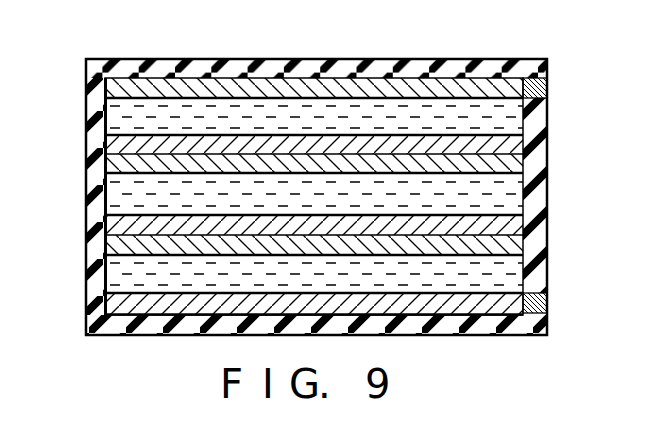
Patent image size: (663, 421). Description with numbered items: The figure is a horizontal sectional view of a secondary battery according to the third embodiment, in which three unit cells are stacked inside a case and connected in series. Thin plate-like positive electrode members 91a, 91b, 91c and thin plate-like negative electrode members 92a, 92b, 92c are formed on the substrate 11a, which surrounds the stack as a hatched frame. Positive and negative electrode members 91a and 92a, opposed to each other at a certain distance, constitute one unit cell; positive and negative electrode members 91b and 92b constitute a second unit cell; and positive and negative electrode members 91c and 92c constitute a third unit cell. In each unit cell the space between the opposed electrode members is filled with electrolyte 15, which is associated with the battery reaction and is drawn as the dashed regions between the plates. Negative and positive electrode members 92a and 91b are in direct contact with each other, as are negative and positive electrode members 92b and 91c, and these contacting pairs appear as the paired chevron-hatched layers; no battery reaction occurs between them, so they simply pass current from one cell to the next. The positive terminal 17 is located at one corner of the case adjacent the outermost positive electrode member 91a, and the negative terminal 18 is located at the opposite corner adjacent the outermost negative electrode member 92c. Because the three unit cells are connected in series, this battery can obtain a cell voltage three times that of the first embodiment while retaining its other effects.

The substrate 11a is at (481, 66).
The electrolyte 15 is at (118, 124).
The positive terminal 17 is at (547, 88).
The negative terminal 18 is at (547, 310).
The positive electrode member 91a is at (116, 88).
The positive electrode member 91b is at (116, 162).
The positive electrode member 91c is at (116, 242).
The negative electrode member 92a is at (547, 135).
The negative electrode member 92b is at (547, 218).
The negative electrode member 92c is at (547, 283).